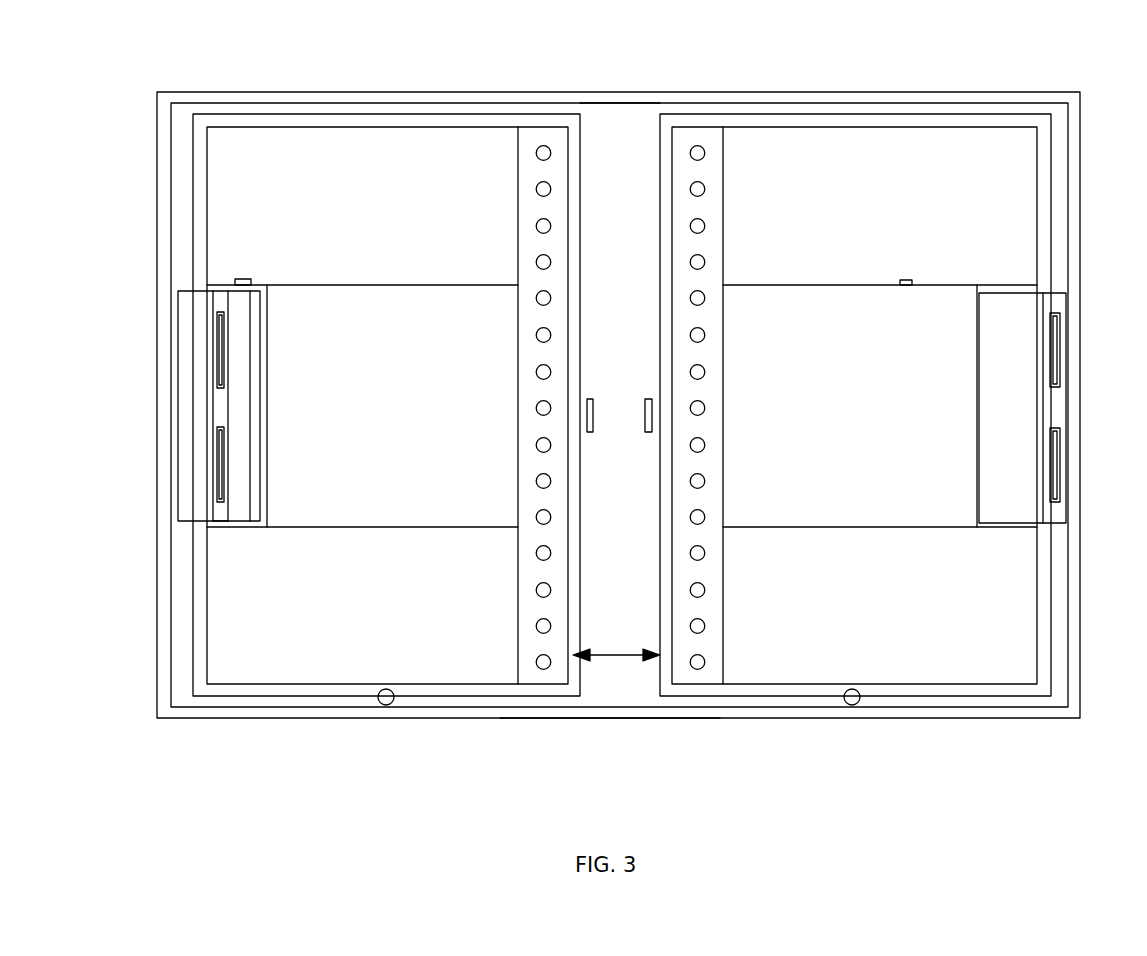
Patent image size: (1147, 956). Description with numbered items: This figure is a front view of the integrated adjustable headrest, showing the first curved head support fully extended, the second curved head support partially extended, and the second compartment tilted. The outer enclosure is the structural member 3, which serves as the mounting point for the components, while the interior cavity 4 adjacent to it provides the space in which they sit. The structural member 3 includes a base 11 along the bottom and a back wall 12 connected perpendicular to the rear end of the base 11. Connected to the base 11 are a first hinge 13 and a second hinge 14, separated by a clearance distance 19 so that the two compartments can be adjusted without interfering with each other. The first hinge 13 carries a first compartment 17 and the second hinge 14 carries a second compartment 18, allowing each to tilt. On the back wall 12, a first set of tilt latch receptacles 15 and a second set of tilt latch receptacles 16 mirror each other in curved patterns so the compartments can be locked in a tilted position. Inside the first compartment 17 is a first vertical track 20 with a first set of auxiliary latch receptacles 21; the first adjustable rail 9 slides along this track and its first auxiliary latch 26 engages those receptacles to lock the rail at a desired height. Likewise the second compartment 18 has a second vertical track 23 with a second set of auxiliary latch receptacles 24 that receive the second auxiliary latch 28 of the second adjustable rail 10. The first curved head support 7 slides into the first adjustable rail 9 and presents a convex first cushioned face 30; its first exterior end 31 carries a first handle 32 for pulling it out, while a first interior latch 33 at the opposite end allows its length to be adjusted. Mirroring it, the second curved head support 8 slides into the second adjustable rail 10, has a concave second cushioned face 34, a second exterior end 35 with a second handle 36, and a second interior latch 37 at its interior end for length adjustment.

The structural member 3 is at (208, 97).
The interior cavity 4 is at (596, 112).
The first curved head support 7 is at (186, 306).
The second curved head support 8 is at (1060, 300).
The first adjustable rail 9 is at (354, 487).
The second adjustable rail 10 is at (848, 485).
The base 11 is at (607, 709).
The back wall 12 is at (640, 125).
The first hinge 13 is at (382, 708).
The second hinge 14 is at (855, 706).
The first set of tilt latch receptacles 15 is at (590, 435).
The second set of tilt latch receptacles 16 is at (659, 392).
The first compartment 17 is at (207, 157).
The second compartment 18 is at (990, 122).
The clearance distance 19 is at (612, 650).
The first vertical track 20 is at (537, 153).
The first set of auxiliary latch receptacles 21 is at (536, 228).
The second vertical track 23 is at (718, 160).
The second set of auxiliary latch receptacles 24 is at (705, 229).
The first auxiliary latch 26 is at (537, 300).
The second auxiliary latch 28 is at (705, 301).
The first cushioned face 30 is at (245, 358).
The first exterior end 31 is at (222, 523).
The first handle 32 is at (218, 378).
The first interior latch 33 is at (243, 280).
The second cushioned face 34 is at (997, 350).
The second exterior end 35 is at (1060, 402).
The second handle 36 is at (1060, 366).
The second interior latch 37 is at (905, 280).